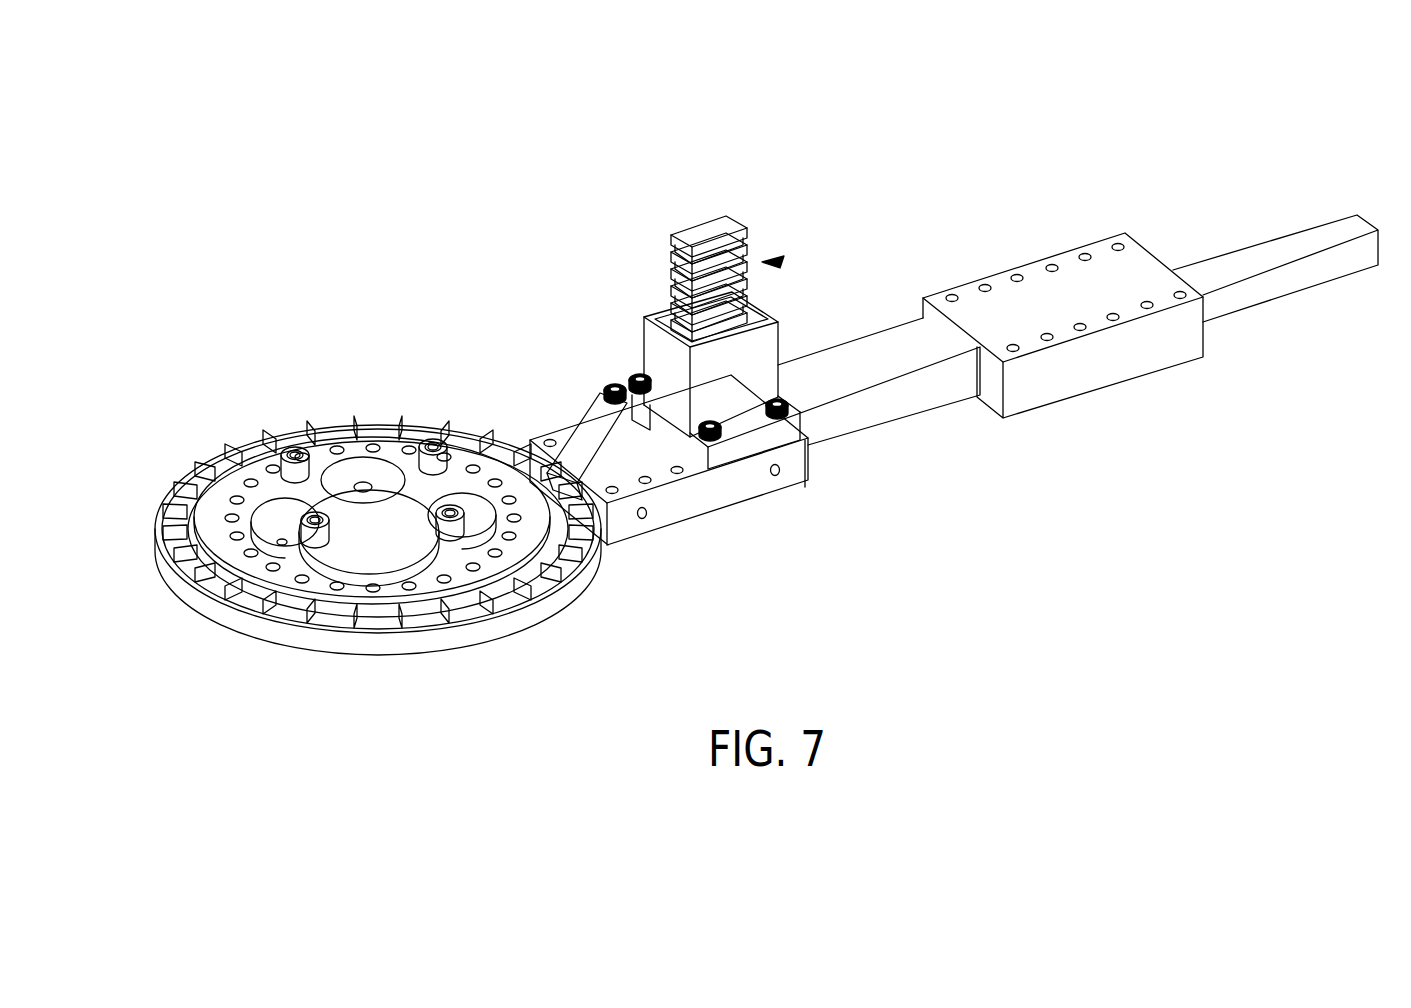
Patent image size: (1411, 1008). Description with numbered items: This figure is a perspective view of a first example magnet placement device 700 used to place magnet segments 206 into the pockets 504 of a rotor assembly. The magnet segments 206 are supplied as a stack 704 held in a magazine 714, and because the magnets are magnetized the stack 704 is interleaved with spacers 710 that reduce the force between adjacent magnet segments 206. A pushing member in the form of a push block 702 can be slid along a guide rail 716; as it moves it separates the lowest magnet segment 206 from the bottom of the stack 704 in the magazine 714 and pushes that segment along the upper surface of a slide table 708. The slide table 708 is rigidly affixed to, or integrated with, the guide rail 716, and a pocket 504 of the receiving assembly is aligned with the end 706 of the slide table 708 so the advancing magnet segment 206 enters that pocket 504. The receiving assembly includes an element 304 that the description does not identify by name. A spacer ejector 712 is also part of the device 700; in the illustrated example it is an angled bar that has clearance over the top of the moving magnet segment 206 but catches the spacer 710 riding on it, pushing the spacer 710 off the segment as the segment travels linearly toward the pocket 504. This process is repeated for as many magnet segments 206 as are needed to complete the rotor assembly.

The magnet placement device 700 is at (1114, 136).
The magnet segments 206 is at (704, 224).
The disc 304 is at (342, 625).
The pockets 504 is at (373, 622).
The push block 702 is at (1150, 250).
The stack 704 is at (780, 268).
The end 706 is at (600, 523).
The slide table 708 is at (798, 464).
The spacers 710 is at (672, 262).
The spacer ejector 712 is at (596, 416).
The magazine 714 is at (780, 340).
The guide rail 716 is at (1330, 232).